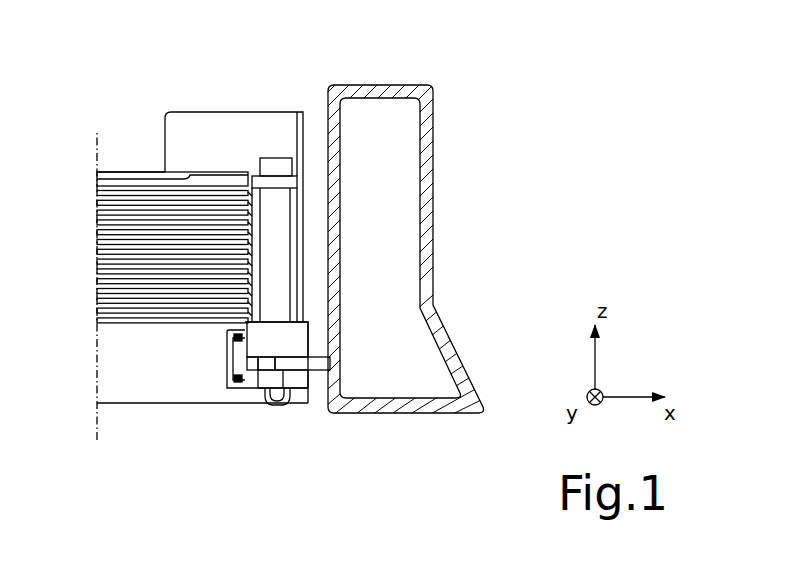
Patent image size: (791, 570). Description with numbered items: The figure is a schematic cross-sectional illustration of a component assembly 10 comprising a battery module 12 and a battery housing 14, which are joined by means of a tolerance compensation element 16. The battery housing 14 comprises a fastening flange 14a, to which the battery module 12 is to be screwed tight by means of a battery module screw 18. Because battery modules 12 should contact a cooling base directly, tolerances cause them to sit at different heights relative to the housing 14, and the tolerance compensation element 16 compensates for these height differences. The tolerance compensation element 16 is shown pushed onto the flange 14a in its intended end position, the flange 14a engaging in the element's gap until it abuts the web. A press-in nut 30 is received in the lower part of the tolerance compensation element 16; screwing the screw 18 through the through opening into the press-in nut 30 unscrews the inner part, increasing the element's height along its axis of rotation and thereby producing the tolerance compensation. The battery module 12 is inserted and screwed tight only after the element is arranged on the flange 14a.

The component assembly 10 is at (370, 65).
The battery module 12 is at (228, 132).
The battery housing 14 is at (425, 160).
The fastening flange 14a is at (330, 357).
The tolerance compensation element 16 is at (278, 335).
The battery module screw 18 is at (275, 165).
The press-in nut 30 is at (298, 380).